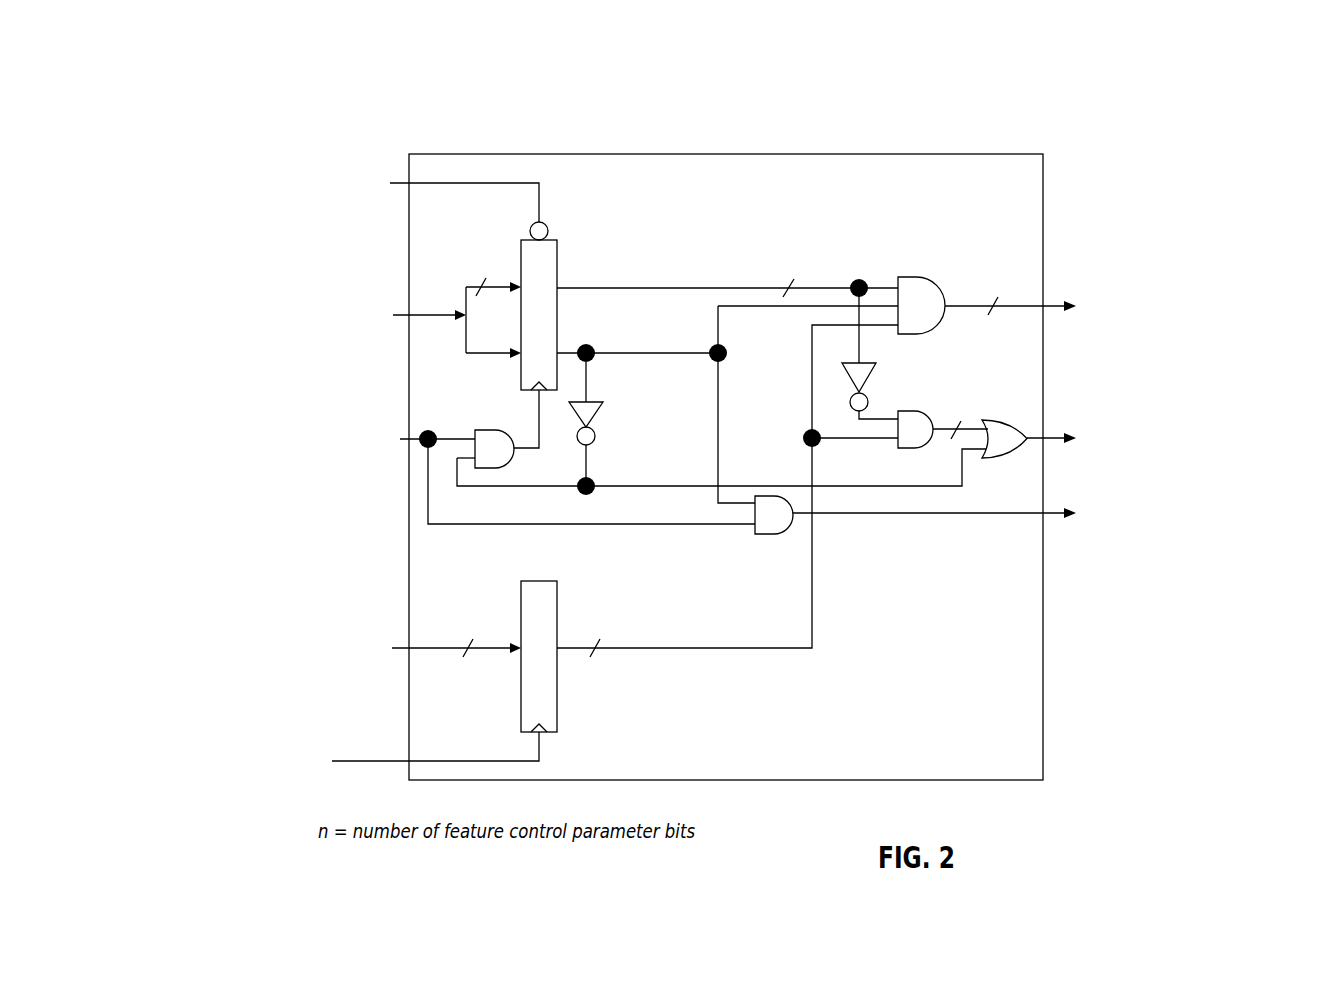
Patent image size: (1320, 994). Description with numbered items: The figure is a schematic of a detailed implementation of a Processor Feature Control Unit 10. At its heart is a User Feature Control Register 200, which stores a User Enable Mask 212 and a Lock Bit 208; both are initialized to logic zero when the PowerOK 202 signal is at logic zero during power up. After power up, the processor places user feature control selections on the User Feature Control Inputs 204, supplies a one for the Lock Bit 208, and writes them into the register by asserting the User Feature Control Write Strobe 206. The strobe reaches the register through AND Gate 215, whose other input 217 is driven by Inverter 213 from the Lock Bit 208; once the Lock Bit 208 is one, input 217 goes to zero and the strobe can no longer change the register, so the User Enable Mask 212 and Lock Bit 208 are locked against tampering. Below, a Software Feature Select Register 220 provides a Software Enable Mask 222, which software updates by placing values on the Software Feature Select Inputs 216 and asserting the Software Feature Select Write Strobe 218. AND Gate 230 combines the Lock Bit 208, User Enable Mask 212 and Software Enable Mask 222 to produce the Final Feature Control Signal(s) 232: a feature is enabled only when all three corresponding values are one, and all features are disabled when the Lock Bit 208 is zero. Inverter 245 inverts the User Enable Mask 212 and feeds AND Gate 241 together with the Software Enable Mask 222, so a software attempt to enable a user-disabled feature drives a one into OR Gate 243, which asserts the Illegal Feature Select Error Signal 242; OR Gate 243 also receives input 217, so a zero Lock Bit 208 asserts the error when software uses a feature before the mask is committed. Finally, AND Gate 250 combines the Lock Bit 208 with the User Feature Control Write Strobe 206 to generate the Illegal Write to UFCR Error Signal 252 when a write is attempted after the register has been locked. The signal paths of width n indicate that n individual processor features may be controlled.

The Processor Feature Control Unit 10 is at (726, 444).
The User Feature Control Register 200 is at (612, 276).
The PowerOK signal 202 is at (397, 174).
The User Feature Control Inputs 204 is at (381, 305).
The User Feature Control Write Strobe 206 is at (505, 444).
The Lock Bit 208 is at (727, 400).
The User Enable Mask 212 is at (727, 297).
The Inverter 213 is at (631, 424).
The AND Gate 215 is at (441, 412).
The Software Feature Select Inputs 216 is at (384, 615).
The input 217 is at (721, 464).
The Software Feature Select Write Strobe 218 is at (364, 729).
The Software Feature Select Register 220 is at (561, 630).
The Software Enable Mask 222 is at (727, 508).
The AND Gate 230 is at (955, 280).
The Final Feature Control Signal(s) 232 is at (1104, 283).
The AND Gate 241 is at (953, 403).
The Illegal Feature Select Error Signal 242 is at (1153, 417).
The OR Gate 243 is at (1016, 416).
The Inverter 245 is at (905, 376).
The AND Gate 250 is at (827, 529).
The Illegal Write to UFCR Error Signal 252 is at (1041, 536).